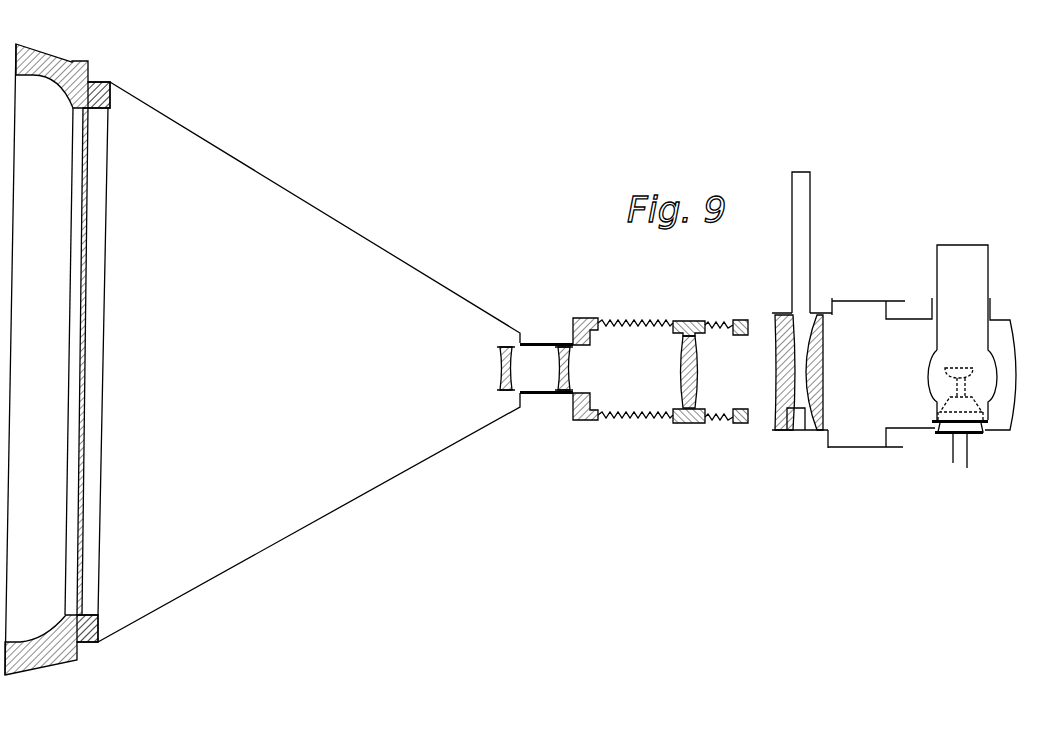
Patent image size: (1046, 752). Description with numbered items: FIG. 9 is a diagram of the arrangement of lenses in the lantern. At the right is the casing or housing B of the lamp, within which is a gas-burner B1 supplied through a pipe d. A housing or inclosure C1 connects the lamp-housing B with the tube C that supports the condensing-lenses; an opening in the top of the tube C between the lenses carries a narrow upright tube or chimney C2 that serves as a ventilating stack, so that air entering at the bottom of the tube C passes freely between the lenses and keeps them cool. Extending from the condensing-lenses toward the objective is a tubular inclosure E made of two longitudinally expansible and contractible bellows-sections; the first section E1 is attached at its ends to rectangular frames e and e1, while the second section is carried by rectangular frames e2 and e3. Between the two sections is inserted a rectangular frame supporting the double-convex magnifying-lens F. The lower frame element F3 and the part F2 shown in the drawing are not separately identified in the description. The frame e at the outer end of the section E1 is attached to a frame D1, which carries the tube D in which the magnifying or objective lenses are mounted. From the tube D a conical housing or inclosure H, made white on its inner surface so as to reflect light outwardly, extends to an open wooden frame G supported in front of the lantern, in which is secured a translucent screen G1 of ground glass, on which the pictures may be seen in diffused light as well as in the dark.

The open frame G is at (107, 83).
The translucent screen G1 is at (86, 357).
The housing or inclosure H is at (304, 527).
The tube for the objective lenses D is at (550, 342).
The frame D1 is at (579, 320).
The rectangular frame e is at (593, 322).
The rectangular frame e1 is at (673, 423).
The bellows-section E1 is at (637, 323).
The tubular inclosure E is at (688, 320).
The magnifying-lens F is at (695, 373).
The lower lens holder block F3 is at (688, 428).
The rectangular frame e2 is at (706, 323).
The rectangular frame e3 is at (745, 315).
The lower right stop block F2 is at (724, 425).
The chimney C2 is at (810, 222).
The condensing-lens tube C is at (781, 315).
The housing or inclosure C1 is at (800, 420).
The lamp casing or housing B is at (1002, 319).
The gas-burner B1 is at (945, 397).
The pipe d is at (973, 451).